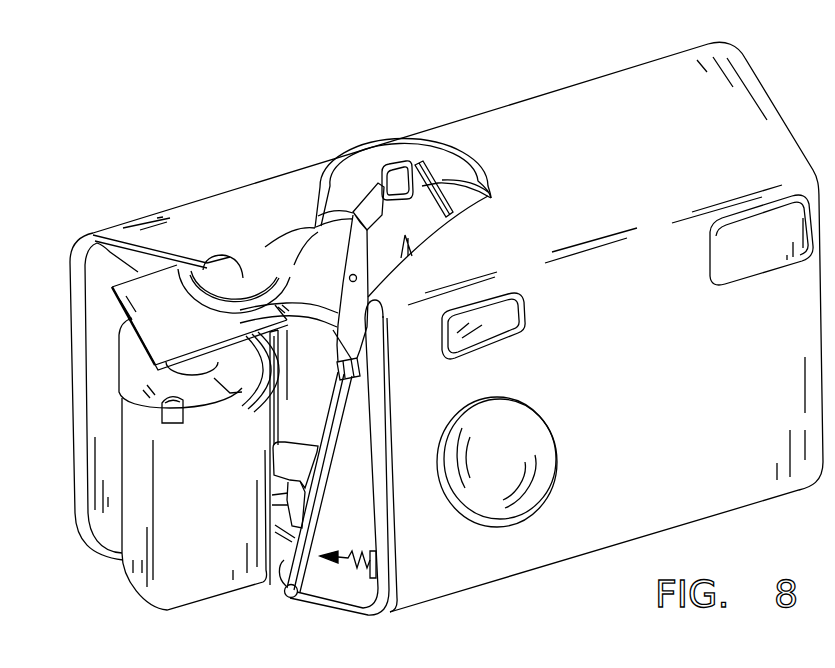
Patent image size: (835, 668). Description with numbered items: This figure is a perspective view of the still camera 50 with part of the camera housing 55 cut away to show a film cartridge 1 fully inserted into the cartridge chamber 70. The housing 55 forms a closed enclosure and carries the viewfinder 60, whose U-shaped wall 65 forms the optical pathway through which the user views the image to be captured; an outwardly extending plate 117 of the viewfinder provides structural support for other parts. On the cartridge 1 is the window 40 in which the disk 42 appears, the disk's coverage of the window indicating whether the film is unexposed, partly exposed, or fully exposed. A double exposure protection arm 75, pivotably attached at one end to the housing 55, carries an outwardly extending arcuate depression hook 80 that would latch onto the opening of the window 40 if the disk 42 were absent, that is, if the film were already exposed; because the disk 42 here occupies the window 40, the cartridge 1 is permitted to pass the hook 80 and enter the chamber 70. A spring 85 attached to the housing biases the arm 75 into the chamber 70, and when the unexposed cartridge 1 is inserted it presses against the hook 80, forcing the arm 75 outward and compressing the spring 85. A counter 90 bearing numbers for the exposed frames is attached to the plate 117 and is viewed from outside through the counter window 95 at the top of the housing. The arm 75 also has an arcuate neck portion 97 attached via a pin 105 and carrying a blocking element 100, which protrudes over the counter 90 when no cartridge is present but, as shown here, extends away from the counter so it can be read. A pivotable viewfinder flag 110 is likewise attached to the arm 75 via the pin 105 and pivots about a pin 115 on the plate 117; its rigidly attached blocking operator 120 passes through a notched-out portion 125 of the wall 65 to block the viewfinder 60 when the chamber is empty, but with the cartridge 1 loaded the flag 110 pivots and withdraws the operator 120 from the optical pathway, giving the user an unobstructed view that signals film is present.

The film cartridge 1 is at (207, 590).
The window 40 is at (233, 335).
The disk 42 is at (224, 400).
The still camera 50 is at (378, 92).
The camera housing 55 is at (568, 92).
The viewfinder 60 is at (482, 322).
The U-shaped wall 65 is at (490, 197).
The cartridge chamber 70 is at (80, 400).
The double exposure protection arm 75 is at (327, 473).
The depression hook 80 is at (288, 447).
The spring 85 is at (352, 558).
The counter 90 is at (283, 242).
The counter window 95 is at (193, 220).
The neck portion 97 is at (333, 342).
The blocking element 100 is at (237, 237).
The pin 105 is at (357, 380).
The viewfinder flag 110 is at (313, 227).
The pin 115 is at (358, 276).
The plate 117 is at (75, 247).
The blocking operator 120 is at (327, 187).
The notched-out portion 125 is at (487, 168).